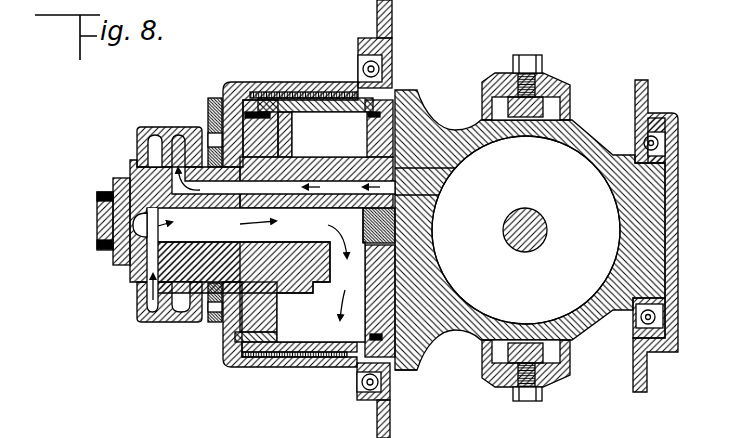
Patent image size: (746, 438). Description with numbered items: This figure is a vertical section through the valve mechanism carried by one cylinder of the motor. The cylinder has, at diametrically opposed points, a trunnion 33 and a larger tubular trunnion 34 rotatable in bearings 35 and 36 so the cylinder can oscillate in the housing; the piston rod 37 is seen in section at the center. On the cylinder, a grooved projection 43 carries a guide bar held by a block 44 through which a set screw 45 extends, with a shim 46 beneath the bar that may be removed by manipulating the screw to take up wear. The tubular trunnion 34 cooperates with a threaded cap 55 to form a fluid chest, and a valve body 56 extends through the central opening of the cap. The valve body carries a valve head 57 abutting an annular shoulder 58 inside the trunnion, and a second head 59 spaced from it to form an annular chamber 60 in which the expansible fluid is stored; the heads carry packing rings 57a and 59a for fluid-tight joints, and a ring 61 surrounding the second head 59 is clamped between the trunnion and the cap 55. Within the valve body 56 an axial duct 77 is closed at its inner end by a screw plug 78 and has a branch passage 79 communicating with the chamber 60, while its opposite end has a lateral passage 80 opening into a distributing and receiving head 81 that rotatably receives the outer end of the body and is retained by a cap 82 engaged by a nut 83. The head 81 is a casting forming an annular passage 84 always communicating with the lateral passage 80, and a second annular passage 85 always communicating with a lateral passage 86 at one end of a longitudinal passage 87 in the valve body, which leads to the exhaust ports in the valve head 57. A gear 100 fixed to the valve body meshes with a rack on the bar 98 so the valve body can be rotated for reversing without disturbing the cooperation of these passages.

The trunnion 33 is at (645, 232).
The trunnion 34 is at (401, 366).
The bearing 35 is at (658, 334).
The bearing 36 is at (391, 398).
The piston rod 37 is at (533, 243).
The grooved projection 43 is at (496, 90).
The block 44 is at (551, 82).
The set screw 45 is at (527, 57).
The shim 46 is at (562, 102).
The threaded cap 55 is at (236, 86).
The valve body 56 is at (300, 280).
The valve head 57 is at (413, 120).
The packing ring 57a is at (393, 100).
The annular shoulder 58 is at (447, 167).
The second head 59 is at (221, 353).
The packing ring 59a is at (262, 98).
The annular chamber 60 is at (331, 128).
The ring 61 is at (262, 343).
The axial duct 77 is at (256, 275).
The screw plug 78 is at (389, 231).
The branch passage 79 is at (338, 284).
The lateral passage 80 is at (138, 283).
The distributing and receiving head 81 is at (155, 324).
The cap 82 is at (132, 265).
The nut 83 is at (110, 252).
The annular passage 84 is at (143, 318).
The second annular passage 85 is at (177, 323).
The lateral passage 86 is at (165, 127).
The longitudinal passage 87 is at (292, 113).
The bar 98 is at (208, 115).
The gear 100 is at (208, 318).